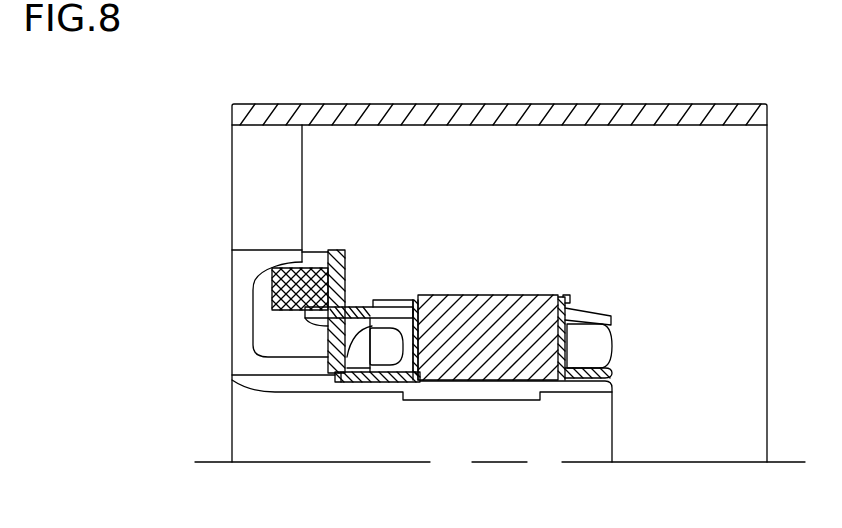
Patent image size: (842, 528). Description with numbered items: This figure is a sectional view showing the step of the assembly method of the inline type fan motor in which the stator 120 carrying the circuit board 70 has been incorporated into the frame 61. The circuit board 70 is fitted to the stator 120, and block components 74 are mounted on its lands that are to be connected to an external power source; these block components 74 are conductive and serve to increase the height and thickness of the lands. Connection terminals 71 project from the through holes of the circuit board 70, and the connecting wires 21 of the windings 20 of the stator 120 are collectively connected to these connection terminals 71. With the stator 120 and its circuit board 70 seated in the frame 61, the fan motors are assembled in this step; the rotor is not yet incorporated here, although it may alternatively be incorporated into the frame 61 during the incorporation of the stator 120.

The frame 61 is at (250, 162).
The circuit board 70 is at (328, 252).
The block components 74 is at (272, 285).
The connection terminals 71 is at (383, 305).
The stator 120 is at (514, 294).
The windings 20 is at (393, 357).
The connecting wires 21 is at (325, 377).